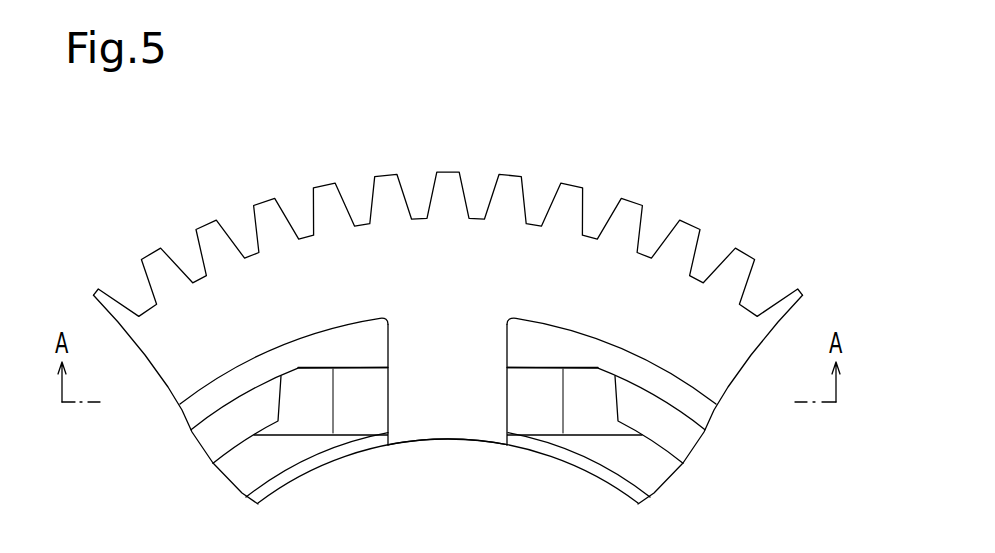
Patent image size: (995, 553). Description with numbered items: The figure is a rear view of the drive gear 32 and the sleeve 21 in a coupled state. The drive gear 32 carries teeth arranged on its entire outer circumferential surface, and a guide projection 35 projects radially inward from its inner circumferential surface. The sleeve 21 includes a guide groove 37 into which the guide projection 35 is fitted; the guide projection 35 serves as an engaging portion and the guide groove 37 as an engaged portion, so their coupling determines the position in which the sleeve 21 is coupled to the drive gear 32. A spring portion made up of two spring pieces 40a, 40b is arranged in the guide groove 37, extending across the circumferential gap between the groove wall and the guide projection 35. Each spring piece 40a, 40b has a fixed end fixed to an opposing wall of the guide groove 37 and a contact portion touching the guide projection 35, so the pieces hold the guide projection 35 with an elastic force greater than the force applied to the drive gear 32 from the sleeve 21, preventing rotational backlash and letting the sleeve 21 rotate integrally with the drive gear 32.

The sleeve 21 is at (683, 443).
The drive gear 32 is at (509, 180).
The guide projection 35 is at (445, 434).
The guide groove 37 is at (282, 404).
The spring piece 40a is at (540, 424).
The spring piece 40b is at (352, 424).